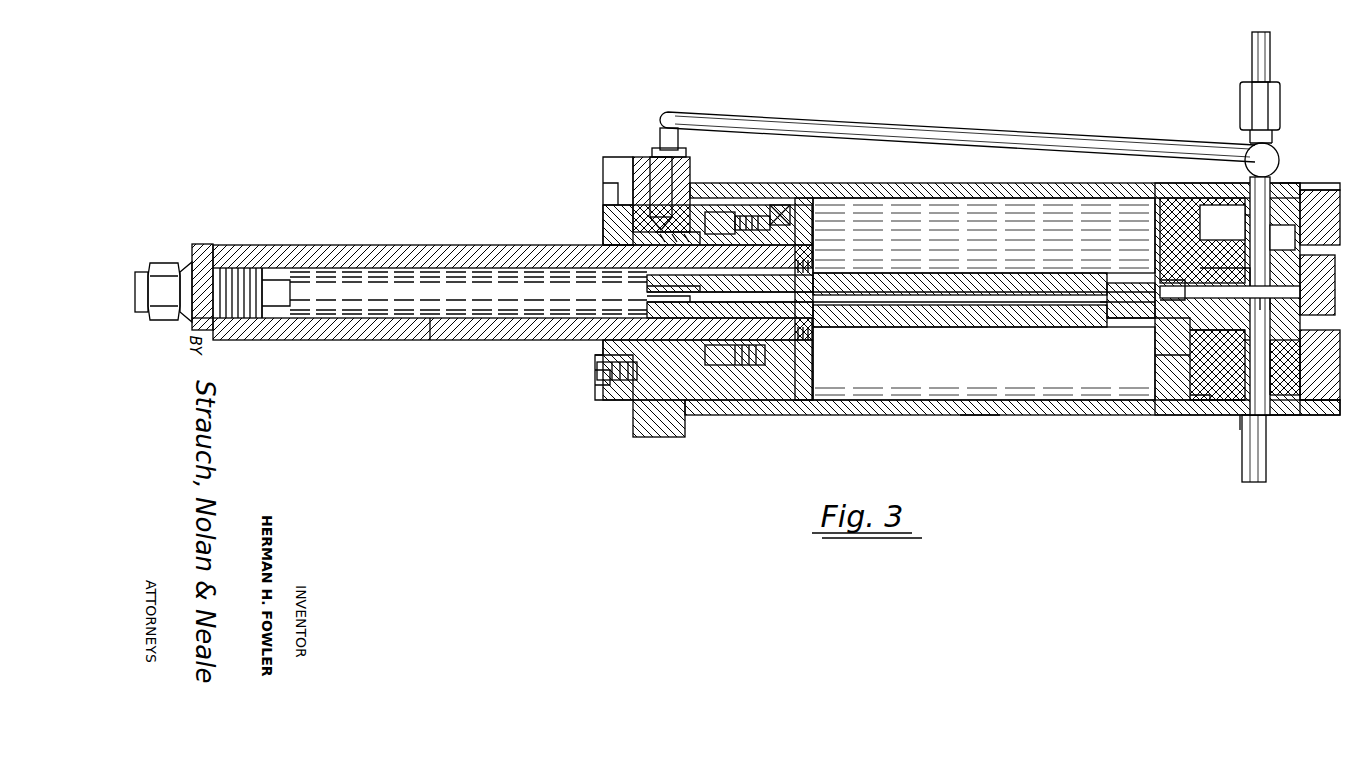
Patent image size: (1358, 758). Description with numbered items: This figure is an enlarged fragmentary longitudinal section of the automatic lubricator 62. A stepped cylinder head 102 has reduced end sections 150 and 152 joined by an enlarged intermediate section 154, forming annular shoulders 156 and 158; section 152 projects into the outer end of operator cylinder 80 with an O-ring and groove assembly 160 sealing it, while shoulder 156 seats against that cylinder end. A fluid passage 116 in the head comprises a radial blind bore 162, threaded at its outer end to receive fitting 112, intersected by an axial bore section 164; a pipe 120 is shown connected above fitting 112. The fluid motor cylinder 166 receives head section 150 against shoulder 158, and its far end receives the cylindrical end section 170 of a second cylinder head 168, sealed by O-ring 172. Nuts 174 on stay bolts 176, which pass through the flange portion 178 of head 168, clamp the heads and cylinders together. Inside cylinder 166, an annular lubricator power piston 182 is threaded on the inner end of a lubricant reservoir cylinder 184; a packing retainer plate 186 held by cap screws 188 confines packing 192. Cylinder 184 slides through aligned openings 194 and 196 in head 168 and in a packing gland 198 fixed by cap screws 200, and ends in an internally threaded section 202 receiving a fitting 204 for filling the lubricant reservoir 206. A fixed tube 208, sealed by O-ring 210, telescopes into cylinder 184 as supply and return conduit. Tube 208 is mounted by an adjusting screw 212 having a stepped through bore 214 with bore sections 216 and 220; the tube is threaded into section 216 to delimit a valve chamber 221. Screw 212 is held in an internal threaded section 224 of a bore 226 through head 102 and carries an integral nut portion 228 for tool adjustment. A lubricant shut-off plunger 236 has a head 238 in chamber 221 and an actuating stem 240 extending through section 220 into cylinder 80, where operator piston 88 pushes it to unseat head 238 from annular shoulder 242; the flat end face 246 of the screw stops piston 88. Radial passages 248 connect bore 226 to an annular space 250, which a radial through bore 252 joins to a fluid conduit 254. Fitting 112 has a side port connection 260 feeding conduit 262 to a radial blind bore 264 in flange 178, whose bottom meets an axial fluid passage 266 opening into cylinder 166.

The lubricator 62 is at (970, 418).
The operator cylinder 80 is at (1290, 418).
The operator piston 88 is at (1325, 190).
The cylinder head 102 is at (1308, 416).
The fitting 112 is at (1280, 104).
The fluid passage 116 is at (1185, 183).
The supply pipe 120 is at (1258, 60).
The end section 150 is at (1180, 416).
The end section 152 is at (1305, 183).
The intermediate section 154 is at (1238, 420).
The annular shoulder 156 is at (1272, 418).
The annular shoulder 158 is at (1212, 416).
The O-ring and groove assembly 160 is at (1278, 190).
The radial blind bore 162 is at (1222, 222).
The bore section 164 is at (1284, 232).
The fluid motor cylinder 166 is at (1045, 416).
The cylinder head 168 is at (668, 447).
The cylindrical end section 170 is at (715, 212).
The O-ring 172 is at (700, 415).
The nuts 174 is at (600, 425).
The stay bolts 176 is at (905, 180).
The flange portion 178 is at (640, 437).
The lubricator power piston 182 is at (813, 348).
The lubricant reservoir cylinder 184 is at (430, 337).
The packing retainer plate 186 is at (730, 415).
The cap screws 188 is at (735, 216).
The packing 192 is at (780, 205).
The opening 194 is at (660, 330).
The opening 196 is at (640, 292).
The packing gland 198 is at (600, 353).
The cap screws 200 is at (597, 378).
The internally threaded section 202 is at (220, 330).
The fitting 204 is at (164, 266).
The lubricant reservoir 206 is at (382, 260).
The fixed tube 208 is at (970, 327).
The O-ring 210 is at (740, 272).
The adjusting screw 212 is at (1140, 262).
The stepped through bore 214 is at (1100, 308).
The bore section 216 is at (1130, 322).
The bore section 220 is at (1320, 365).
The valve chamber 221 is at (1248, 228).
The internal threaded section 224 is at (1217, 347).
The bore 226 is at (1295, 283).
The nut portion 228 is at (1155, 368).
The lubricant shut-off plunger 236 is at (1208, 272).
The plunger head 238 is at (1158, 330).
The actuating stem 240 is at (1268, 300).
The annular shoulder 242 is at (1165, 305).
The end face 246 is at (1272, 295).
The radial passages 248 is at (1280, 367).
The annular space 250 is at (1250, 360).
The radial through bore 252 is at (1217, 398).
The fluid conduit 254 is at (1250, 482).
The side port connection 260 is at (1248, 152).
The conduit 262 is at (1035, 135).
The radial blind bore 264 is at (660, 175).
The axial fluid passage 266 is at (690, 238).